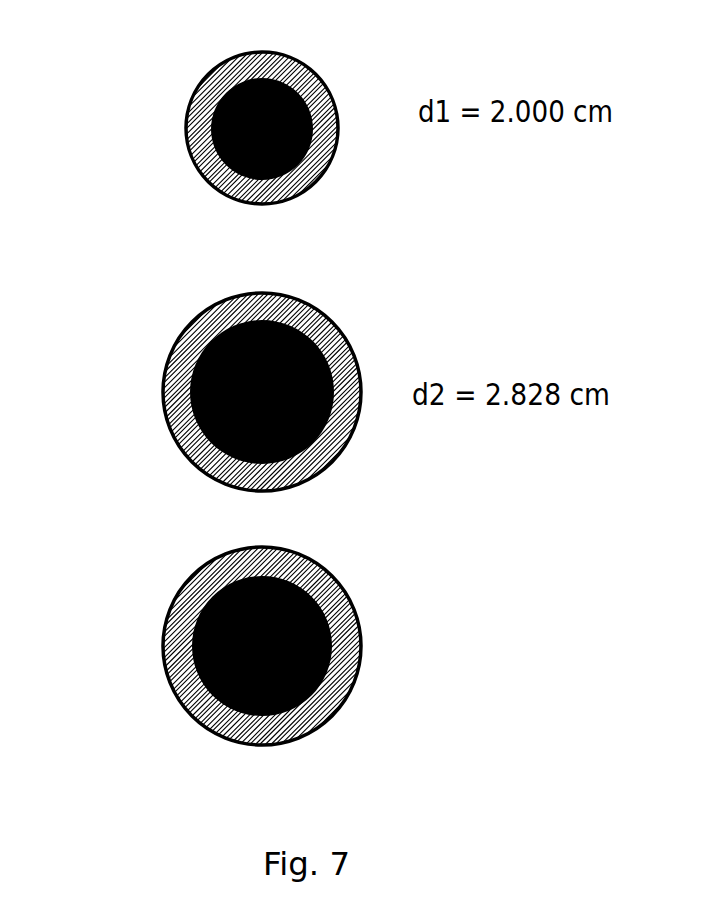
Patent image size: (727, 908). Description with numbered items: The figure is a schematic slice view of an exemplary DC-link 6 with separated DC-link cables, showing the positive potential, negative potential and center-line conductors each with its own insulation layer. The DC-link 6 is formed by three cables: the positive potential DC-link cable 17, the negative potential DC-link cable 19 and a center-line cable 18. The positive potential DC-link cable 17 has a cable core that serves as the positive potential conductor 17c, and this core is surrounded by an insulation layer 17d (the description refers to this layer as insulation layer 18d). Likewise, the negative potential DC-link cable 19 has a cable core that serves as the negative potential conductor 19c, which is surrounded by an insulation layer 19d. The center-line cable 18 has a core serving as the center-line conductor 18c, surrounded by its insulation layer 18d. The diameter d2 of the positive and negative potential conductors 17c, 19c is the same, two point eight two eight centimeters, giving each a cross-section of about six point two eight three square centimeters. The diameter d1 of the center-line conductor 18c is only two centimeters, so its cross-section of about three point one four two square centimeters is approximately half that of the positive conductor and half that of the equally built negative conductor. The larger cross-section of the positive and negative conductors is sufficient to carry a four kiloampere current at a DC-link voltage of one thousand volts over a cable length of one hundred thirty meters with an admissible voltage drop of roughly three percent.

The DC-link 6 is at (497, 508).
The positive potential DC-link cable 17 is at (180, 333).
The positive potential conductor 17c is at (322, 354).
The insulation layer 17d is at (190, 440).
The center-line cable 18 is at (227, 63).
The center-line conductor 18c is at (218, 157).
The insulation layer 18d is at (307, 162).
The negative potential DC-link cable 19 is at (180, 597).
The negative potential conductor 19c is at (330, 622).
The insulation layer 19d is at (223, 713).